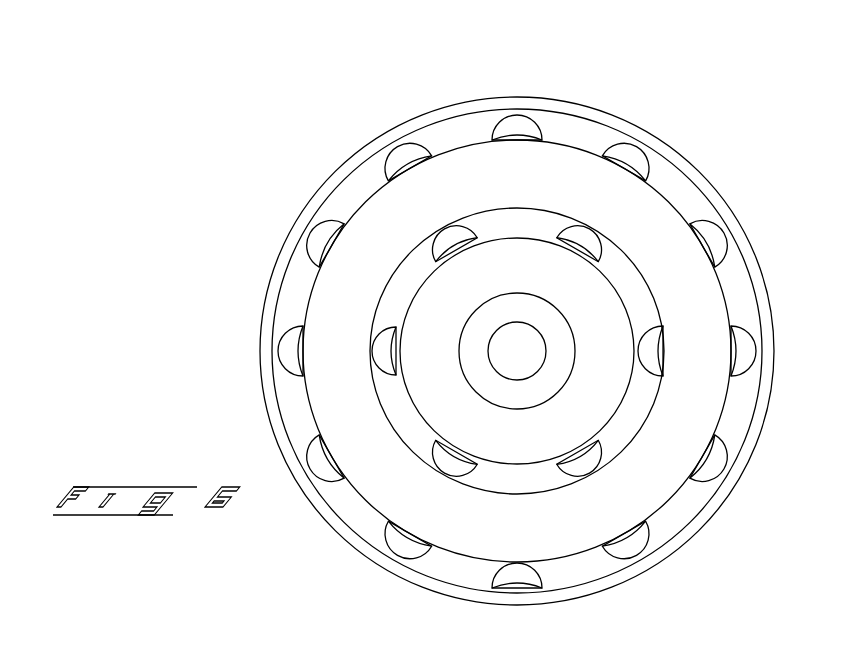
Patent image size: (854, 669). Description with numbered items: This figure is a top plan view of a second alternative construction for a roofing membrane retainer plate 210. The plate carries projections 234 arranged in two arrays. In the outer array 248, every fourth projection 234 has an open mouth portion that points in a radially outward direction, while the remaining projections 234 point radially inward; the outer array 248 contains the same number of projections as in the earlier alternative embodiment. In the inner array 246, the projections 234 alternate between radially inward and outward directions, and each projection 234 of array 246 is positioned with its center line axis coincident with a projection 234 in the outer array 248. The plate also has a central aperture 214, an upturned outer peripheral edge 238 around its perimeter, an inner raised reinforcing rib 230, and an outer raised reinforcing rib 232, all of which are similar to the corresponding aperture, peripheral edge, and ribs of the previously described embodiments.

The roofing membrane retainer plate 210 is at (313, 133).
The central aperture 214 is at (517, 347).
The inner raised reinforcing rib 230 is at (462, 318).
The outer raised reinforcing rib 232 is at (397, 253).
The projections 234 is at (417, 148).
The upturned outer peripheral edge 238 is at (350, 537).
The array 246 is at (583, 206).
The outer array 248 is at (707, 201).